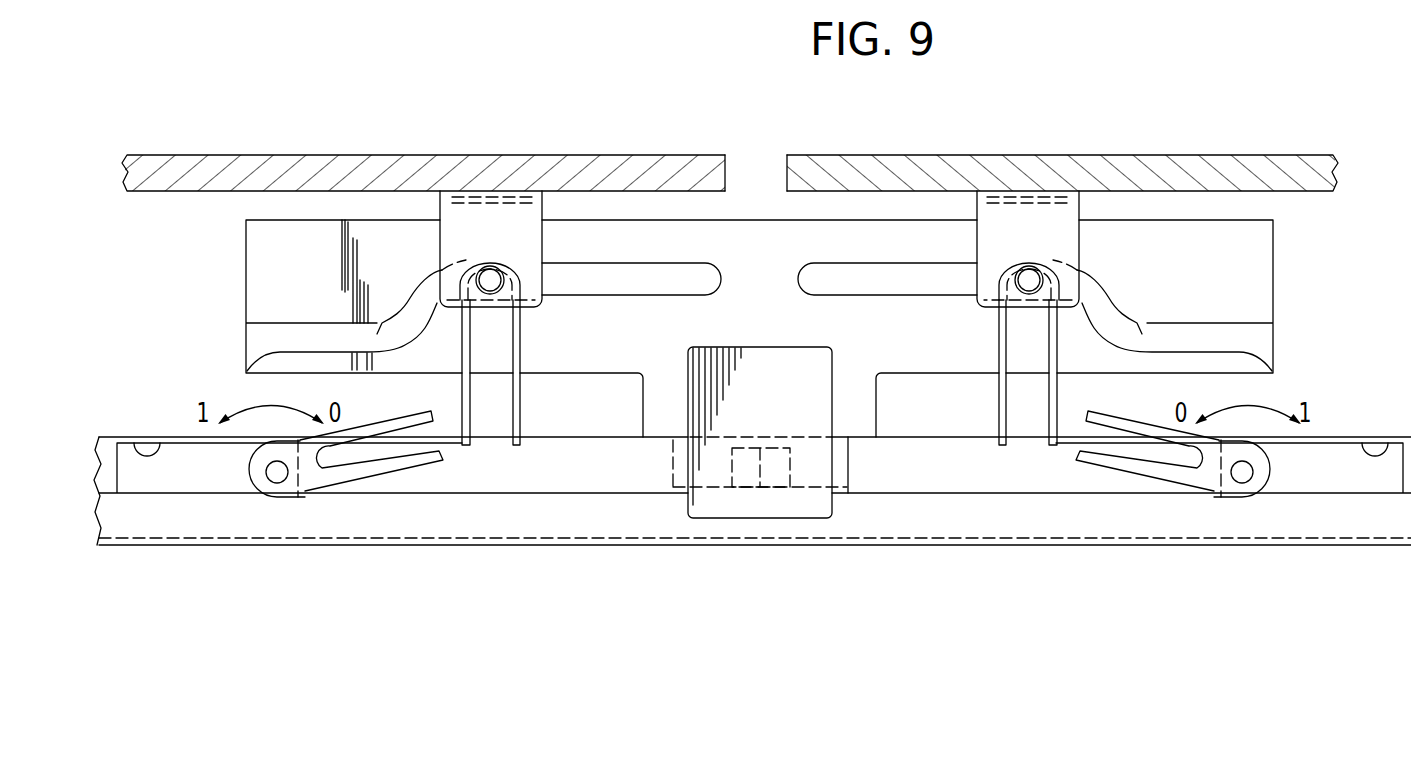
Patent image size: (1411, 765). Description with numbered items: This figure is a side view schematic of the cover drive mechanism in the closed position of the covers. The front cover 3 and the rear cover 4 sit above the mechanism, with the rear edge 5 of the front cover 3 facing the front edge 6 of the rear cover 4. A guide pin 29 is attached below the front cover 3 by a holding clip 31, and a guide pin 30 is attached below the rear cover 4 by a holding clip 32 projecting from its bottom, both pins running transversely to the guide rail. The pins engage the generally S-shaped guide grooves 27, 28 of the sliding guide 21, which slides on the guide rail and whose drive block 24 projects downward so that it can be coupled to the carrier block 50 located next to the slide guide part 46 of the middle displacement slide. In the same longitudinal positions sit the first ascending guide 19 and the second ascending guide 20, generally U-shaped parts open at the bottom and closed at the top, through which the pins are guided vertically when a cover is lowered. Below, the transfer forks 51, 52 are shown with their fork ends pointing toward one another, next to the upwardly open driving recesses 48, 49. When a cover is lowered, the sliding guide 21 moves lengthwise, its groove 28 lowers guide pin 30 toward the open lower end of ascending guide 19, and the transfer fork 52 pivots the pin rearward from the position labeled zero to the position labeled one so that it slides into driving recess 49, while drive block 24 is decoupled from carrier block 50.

The front cover 3 is at (370, 167).
The rear cover 4 is at (1210, 170).
The rear edge 5 is at (727, 170).
The front edge 6 is at (784, 170).
The first ascending guide 19 is at (1000, 350).
The second ascending guide 20 is at (522, 340).
The sliding guide 21 is at (290, 242).
The drive block 24 is at (733, 408).
The guide groove 27 is at (378, 324).
The guide groove 28 is at (1147, 340).
The guide pin 29 is at (488, 276).
The guide pin 30 is at (1029, 277).
The holding clip 31 is at (460, 210).
The holding clip 32 is at (1045, 220).
The slide guide part 46 is at (840, 469).
The driving recess 48 is at (148, 447).
The driving recess 49 is at (1377, 450).
The carrier block 50 is at (747, 472).
The transfer fork 51 is at (375, 473).
The transfer fork 52 is at (1143, 475).